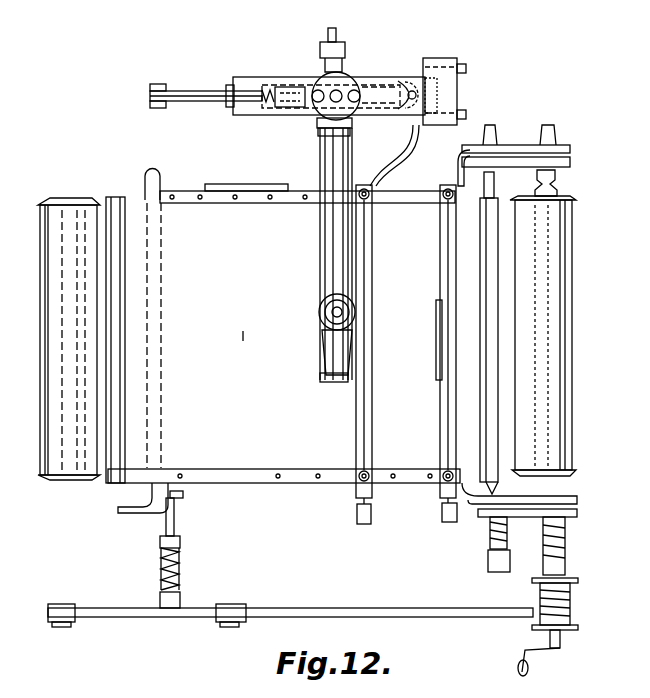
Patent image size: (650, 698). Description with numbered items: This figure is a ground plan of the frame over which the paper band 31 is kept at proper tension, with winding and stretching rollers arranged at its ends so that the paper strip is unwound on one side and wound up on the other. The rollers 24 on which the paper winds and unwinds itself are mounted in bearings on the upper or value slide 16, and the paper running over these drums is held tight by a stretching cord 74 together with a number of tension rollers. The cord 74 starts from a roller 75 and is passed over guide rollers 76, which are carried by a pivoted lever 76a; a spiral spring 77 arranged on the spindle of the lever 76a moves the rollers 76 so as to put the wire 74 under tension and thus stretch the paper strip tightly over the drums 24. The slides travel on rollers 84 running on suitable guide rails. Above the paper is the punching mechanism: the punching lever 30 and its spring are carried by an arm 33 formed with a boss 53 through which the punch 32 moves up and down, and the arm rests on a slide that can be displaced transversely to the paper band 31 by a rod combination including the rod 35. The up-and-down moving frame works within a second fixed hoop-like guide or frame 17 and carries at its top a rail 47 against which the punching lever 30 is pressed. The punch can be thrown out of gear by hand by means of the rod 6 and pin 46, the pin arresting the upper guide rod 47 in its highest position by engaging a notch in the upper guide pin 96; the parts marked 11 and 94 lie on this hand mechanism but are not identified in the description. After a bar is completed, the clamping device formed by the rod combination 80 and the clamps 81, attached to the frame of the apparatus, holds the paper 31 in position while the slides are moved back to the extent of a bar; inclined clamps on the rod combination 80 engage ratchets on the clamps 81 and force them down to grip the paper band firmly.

The rod 6 is at (162, 102).
The shaft 11 is at (213, 102).
The sleeve 94 is at (282, 85).
The pin 46 is at (318, 68).
The rod combination 35 is at (343, 68).
The upper guide pin 96 is at (354, 78).
The fixed hoop-like guide frame 17 is at (483, 109).
The rollers 24 is at (85, 200).
The upper slide 16 is at (240, 186).
The arm 33 is at (207, 320).
The rail 47 is at (392, 168).
The punching lever 30 is at (330, 290).
The paper band 31 is at (290, 336).
The punch 32 is at (318, 326).
The boss 53 is at (320, 368).
The clamps 81 is at (440, 333).
The rollers 84 is at (437, 298).
The rod combination 80 is at (358, 441).
The spiral spring 77 is at (180, 572).
The guide rollers 76 is at (78, 610).
The pivoted lever 76a is at (147, 608).
The stretching cord 74 is at (390, 606).
The roller 75 is at (538, 590).